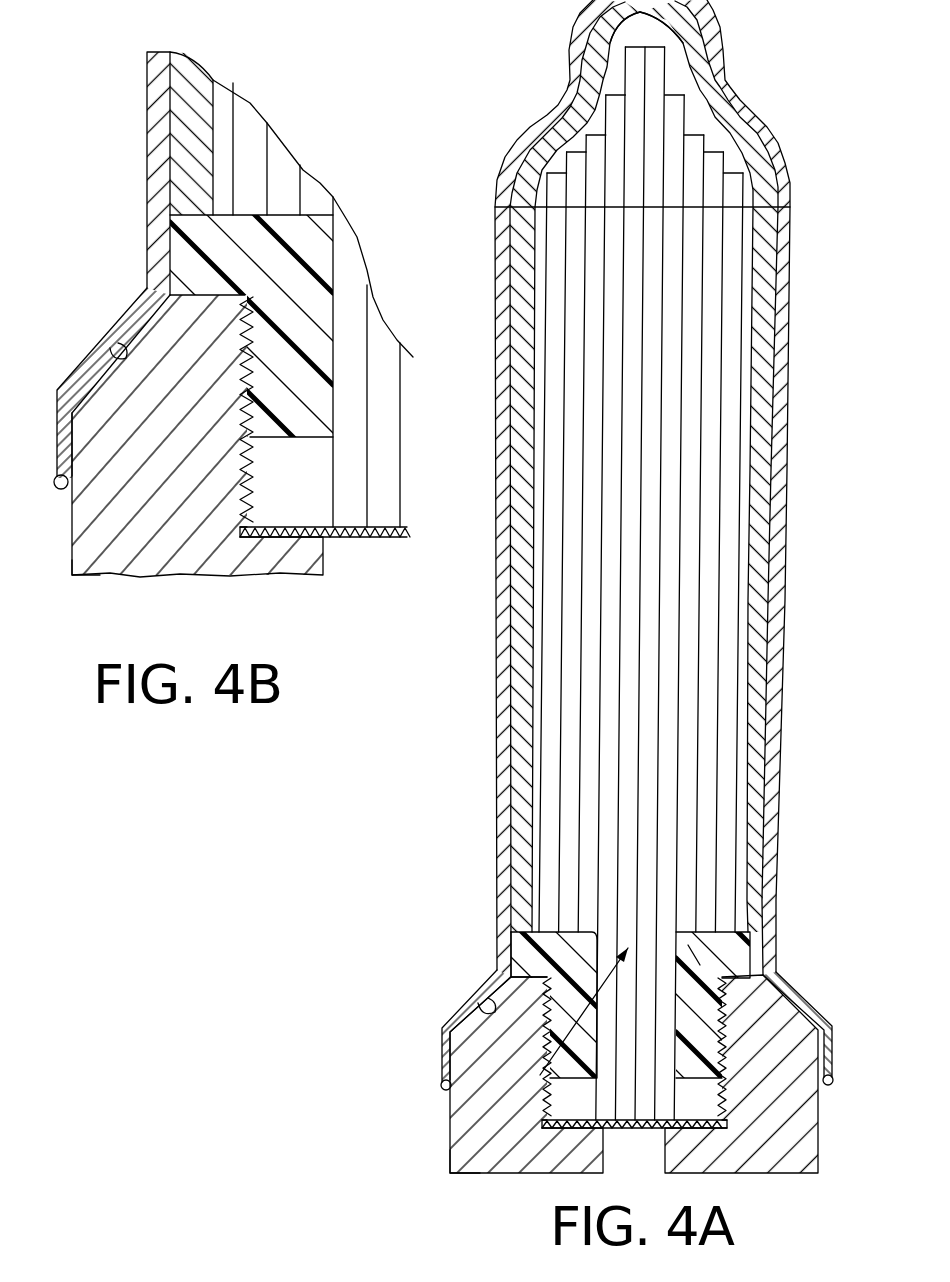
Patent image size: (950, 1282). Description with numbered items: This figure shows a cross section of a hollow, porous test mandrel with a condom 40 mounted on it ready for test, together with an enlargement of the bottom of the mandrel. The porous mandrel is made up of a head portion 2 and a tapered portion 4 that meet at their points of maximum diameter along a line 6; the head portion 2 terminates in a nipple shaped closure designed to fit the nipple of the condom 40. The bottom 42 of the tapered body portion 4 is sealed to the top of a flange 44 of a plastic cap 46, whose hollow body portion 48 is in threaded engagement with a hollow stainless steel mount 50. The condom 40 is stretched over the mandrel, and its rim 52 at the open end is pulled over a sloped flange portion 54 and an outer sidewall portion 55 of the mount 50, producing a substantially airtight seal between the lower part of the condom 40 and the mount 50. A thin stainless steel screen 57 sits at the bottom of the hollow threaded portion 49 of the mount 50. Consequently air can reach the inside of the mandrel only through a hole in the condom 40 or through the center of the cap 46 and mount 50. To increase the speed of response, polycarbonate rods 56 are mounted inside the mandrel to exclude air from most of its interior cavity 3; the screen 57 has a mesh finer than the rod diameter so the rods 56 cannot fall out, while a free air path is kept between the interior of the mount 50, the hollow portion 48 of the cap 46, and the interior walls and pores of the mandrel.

In FIG. 4A, the head portion 2 is at (583, 93).
In FIG. 4B, the head portion 2 is at (193, 100).
In FIG. 4A, the interior cavity 3 is at (680, 80).
In FIG. 4A, the tapered portion 4 is at (497, 750).
In FIG. 4A, the line 6 is at (613, 213).
In FIG. 4A, the condom 40 is at (497, 640).
In FIG. 4B, the condom 40 is at (147, 127).
In FIG. 4A, the bottom 42 is at (513, 883).
In FIG. 4A, the flange 44 is at (752, 960).
In FIG. 4B, the flange 44 is at (167, 293).
In FIG. 4A, the plastic cap 46 is at (688, 945).
In FIG. 4B, the plastic cap 46 is at (307, 293).
In FIG. 4A, the hollow body portion 48 is at (547, 1033).
In FIG. 4A, the hollow threaded portion 49 is at (725, 1060).
In FIG. 4B, the hollow threaded portion 49 is at (250, 470).
In FIG. 4A, the hollow stainless steel mount 50 is at (478, 1118).
In FIG. 4B, the hollow stainless steel mount 50 is at (280, 552).
In FIG. 4A, the rim 52 is at (440, 1090).
In FIG. 4B, the rim 52 is at (58, 490).
In FIG. 4A, the sloped flange portion 54 is at (490, 1012).
In FIG. 4B, the sloped flange portion 54 is at (123, 355).
In FIG. 4A, the outer sidewall portion 55 is at (452, 1150).
In FIG. 4B, the outer sidewall portion 55 is at (66, 577).
In FIG. 4A, the polycarbonate rods 56 is at (733, 482).
In FIG. 4A, the stainless steel screen 57 is at (642, 1130).
In FIG. 4B, the stainless steel screen 57 is at (268, 527).